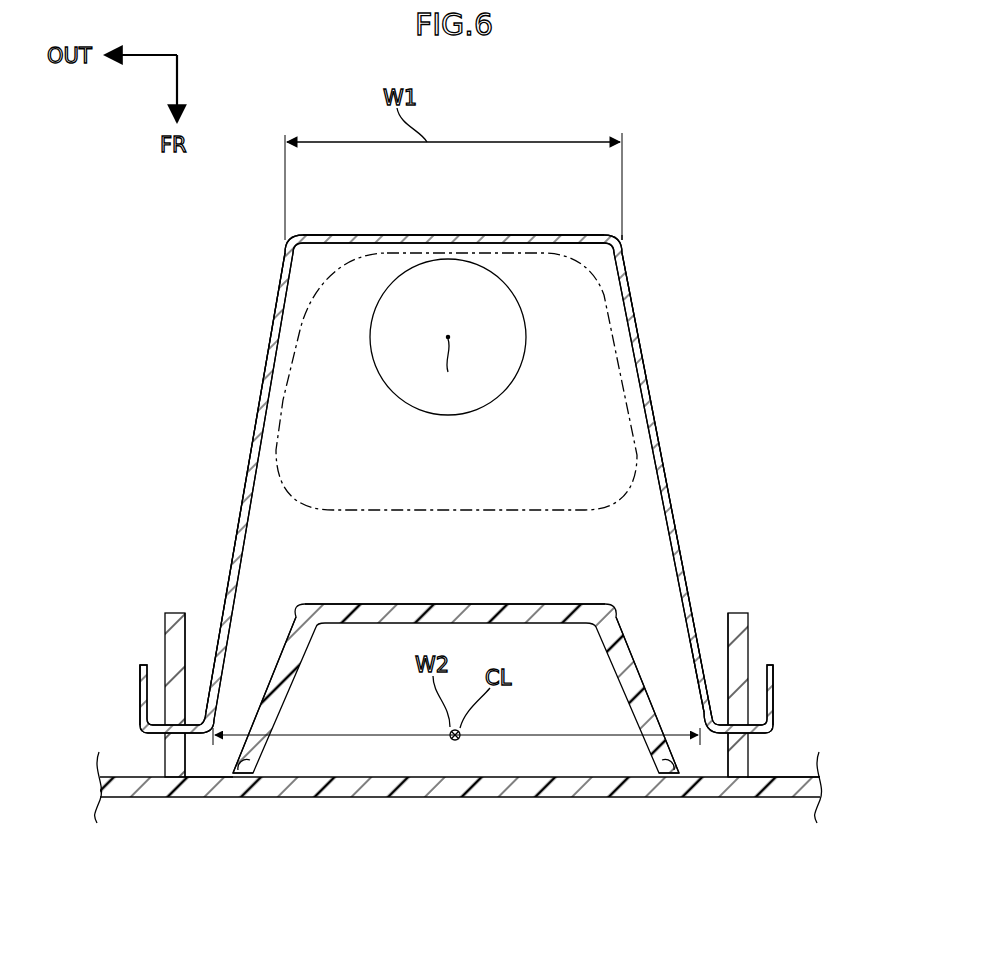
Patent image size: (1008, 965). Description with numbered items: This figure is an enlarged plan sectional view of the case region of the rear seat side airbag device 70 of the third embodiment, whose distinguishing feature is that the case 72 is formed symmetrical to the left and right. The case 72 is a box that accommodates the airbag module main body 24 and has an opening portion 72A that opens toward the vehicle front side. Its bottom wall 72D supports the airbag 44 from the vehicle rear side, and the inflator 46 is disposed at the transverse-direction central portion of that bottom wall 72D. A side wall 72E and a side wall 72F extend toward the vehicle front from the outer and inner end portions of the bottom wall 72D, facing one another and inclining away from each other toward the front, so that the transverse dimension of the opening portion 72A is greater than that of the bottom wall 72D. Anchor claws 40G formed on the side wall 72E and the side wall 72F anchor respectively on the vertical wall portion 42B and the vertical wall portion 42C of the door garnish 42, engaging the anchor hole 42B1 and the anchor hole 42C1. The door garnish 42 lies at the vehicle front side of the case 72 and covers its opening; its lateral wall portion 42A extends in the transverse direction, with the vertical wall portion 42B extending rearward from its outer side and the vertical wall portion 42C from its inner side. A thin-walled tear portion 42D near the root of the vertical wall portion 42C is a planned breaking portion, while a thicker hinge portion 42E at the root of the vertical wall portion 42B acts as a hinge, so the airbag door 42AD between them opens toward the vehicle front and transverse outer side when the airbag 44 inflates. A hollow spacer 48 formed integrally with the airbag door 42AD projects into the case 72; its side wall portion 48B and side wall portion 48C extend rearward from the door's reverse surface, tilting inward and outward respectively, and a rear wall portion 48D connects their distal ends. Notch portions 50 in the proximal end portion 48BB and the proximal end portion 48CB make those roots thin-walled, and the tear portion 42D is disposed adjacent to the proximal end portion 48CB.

The rear seat side airbag device 70 is at (733, 185).
The case 72 is at (461, 441).
The airbag module main body 24 is at (604, 281).
The bottom wall 72D is at (430, 236).
The side wall 72E is at (255, 400).
The side wall 72F is at (655, 372).
The opening portion 72A is at (690, 695).
The anchor claw 40G is at (140, 690).
The airbag 44 is at (497, 512).
The inflator 46 is at (490, 405).
The spacer 48 is at (482, 707).
The side wall portion 48B is at (272, 652).
The side wall portion 48C is at (648, 655).
The rear wall portion 48D is at (362, 604).
The proximal end portion 48BB is at (258, 797).
The proximal end portion 48CB is at (650, 797).
The notch portion 50 is at (662, 757).
The door garnish 42 is at (468, 696).
The lateral wall portion 42A is at (140, 797).
The airbag door 42AD is at (405, 797).
The vertical wall portion 42B is at (165, 620).
The anchor hole 42B1 is at (157, 700).
The vertical wall portion 42C is at (745, 622).
The anchor hole 42C1 is at (753, 700).
The tear portion 42D is at (700, 760).
The hinge portion 42E is at (198, 706).